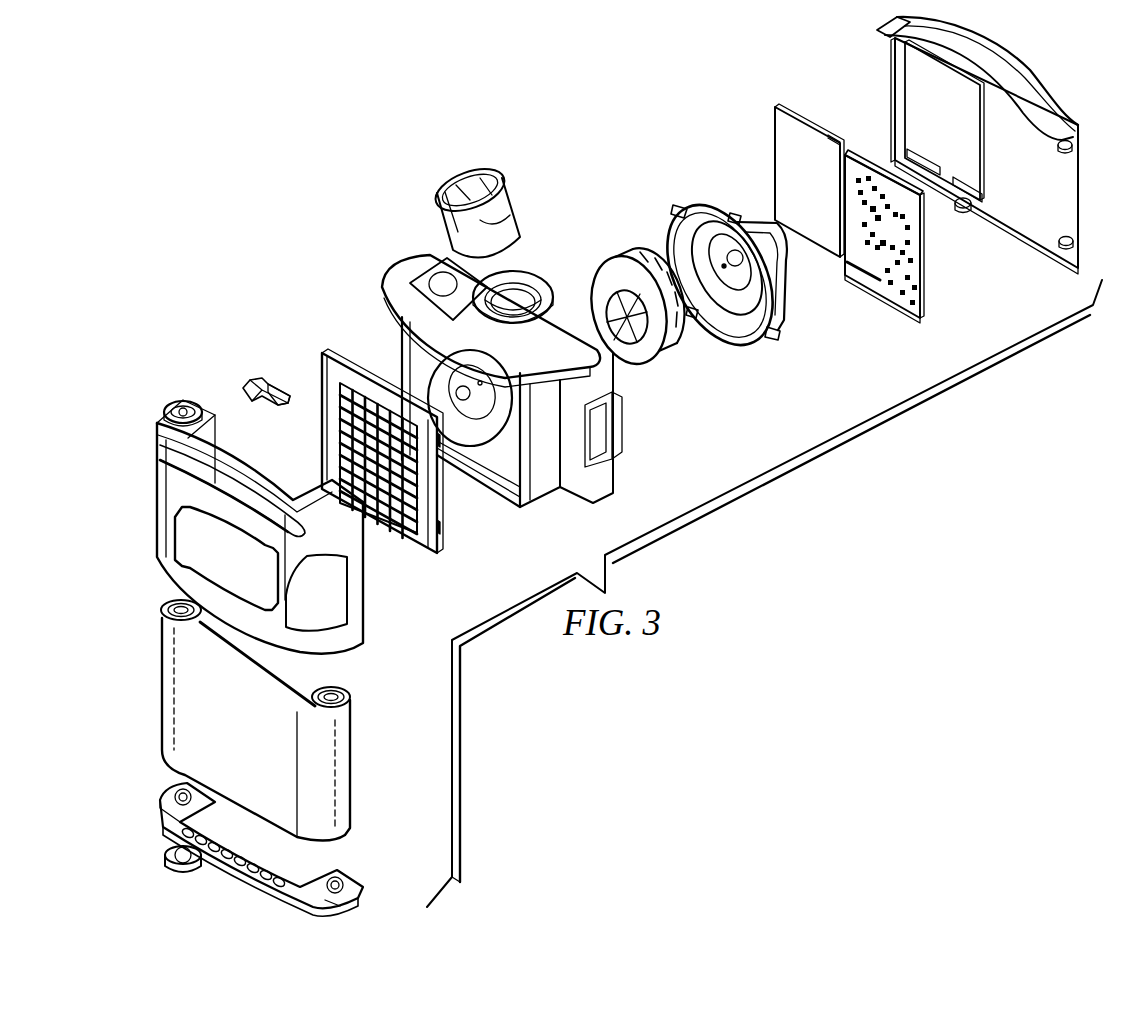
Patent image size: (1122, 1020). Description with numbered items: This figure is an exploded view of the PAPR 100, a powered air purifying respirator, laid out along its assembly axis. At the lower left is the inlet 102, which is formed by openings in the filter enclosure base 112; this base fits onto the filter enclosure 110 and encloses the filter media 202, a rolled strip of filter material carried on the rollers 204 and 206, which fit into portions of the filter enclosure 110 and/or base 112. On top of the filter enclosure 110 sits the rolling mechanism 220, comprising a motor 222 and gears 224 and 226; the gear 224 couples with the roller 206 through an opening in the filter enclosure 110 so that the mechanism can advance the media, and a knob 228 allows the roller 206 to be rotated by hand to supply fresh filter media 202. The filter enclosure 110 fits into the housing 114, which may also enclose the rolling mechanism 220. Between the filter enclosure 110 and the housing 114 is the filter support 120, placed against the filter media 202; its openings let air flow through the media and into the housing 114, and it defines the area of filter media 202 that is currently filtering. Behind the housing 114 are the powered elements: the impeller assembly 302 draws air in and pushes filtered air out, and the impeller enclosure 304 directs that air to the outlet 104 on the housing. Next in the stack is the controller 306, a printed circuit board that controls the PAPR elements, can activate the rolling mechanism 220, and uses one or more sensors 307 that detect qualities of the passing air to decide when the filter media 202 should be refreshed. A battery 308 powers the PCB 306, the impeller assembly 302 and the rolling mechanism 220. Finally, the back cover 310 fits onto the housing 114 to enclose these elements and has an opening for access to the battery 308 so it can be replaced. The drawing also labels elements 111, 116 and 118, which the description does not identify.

The PAPR 100 is at (262, 250).
The inlet 102 is at (258, 859).
The outlet 104 is at (530, 268).
The filter enclosure 110 is at (222, 527).
The housing band 111 is at (180, 478).
The filter enclosure base 112 is at (337, 903).
The housing 114 is at (525, 334).
The cap 116 is at (515, 191).
The mounting plate 118 is at (433, 244).
The filter support 120 is at (440, 505).
The filter media 202 is at (257, 716).
The roller 204 is at (343, 690).
The roller 206 is at (162, 600).
The rolling mechanism 220 is at (256, 377).
The motor 222 is at (258, 378).
The gear 224 is at (164, 405).
The gear 226 is at (258, 398).
The knob 228 is at (178, 880).
The impeller assembly 302 is at (656, 350).
The impeller enclosure 304 is at (672, 226).
The controller (PCB) 306 is at (876, 199).
The sensors 307 is at (885, 160).
The battery 308 is at (790, 134).
The back cover 310 is at (1032, 228).